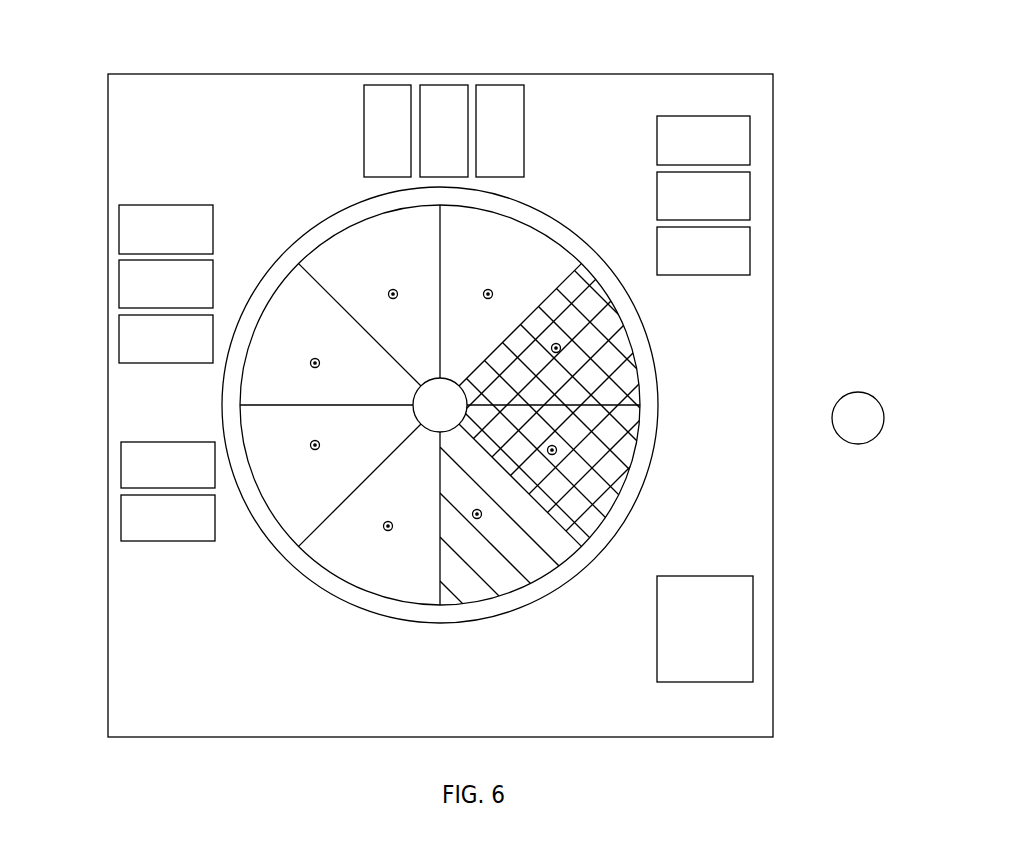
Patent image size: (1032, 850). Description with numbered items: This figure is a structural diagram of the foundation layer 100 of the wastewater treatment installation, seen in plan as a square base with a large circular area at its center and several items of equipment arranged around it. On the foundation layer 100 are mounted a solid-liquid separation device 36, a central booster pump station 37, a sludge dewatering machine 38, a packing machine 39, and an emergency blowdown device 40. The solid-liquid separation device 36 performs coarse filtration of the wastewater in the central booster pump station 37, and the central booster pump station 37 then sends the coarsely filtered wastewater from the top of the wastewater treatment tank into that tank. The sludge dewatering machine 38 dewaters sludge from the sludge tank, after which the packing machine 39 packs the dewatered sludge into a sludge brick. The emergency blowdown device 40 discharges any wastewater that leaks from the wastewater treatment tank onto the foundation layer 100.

The foundation layer 100 is at (728, 388).
The solid-liquid separation device 36 is at (130, 287).
The central booster pump station 37 is at (138, 520).
The sludge dewatering machine 38 is at (440, 103).
The packing machine 39 is at (723, 197).
The emergency blowdown device 40 is at (727, 635).